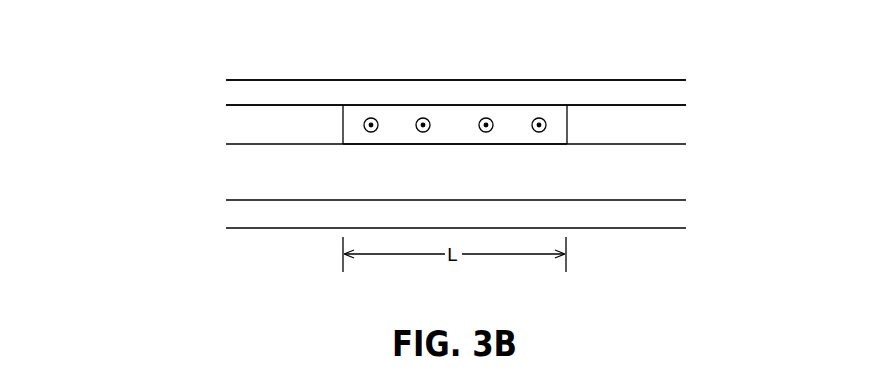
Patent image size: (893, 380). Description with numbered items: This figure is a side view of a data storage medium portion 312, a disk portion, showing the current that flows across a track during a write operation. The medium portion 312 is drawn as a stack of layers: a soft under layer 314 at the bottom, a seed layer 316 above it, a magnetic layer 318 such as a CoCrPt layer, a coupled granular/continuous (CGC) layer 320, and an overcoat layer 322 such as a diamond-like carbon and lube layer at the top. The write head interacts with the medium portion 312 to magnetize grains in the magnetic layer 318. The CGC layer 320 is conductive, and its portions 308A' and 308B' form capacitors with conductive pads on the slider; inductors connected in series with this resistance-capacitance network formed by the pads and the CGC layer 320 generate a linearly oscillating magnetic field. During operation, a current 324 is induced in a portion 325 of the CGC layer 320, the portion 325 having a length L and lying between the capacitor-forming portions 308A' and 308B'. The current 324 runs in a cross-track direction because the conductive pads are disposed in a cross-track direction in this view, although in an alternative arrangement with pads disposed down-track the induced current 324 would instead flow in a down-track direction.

The data storage medium portion 312 is at (178, 74).
The overcoat layer 322 is at (667, 93).
The coupled granular/continuous (CGC) layer 320 is at (667, 125).
The magnetic layer 318 is at (667, 176).
The seed layer 316 is at (667, 214).
The soft under layer 314 is at (667, 245).
The first portion of the CGC layer 308A' is at (284, 64).
The second portion of the CGC layer 308B' is at (626, 64).
The current 324 is at (473, 124).
The portion of the CGC layer 325 is at (512, 158).